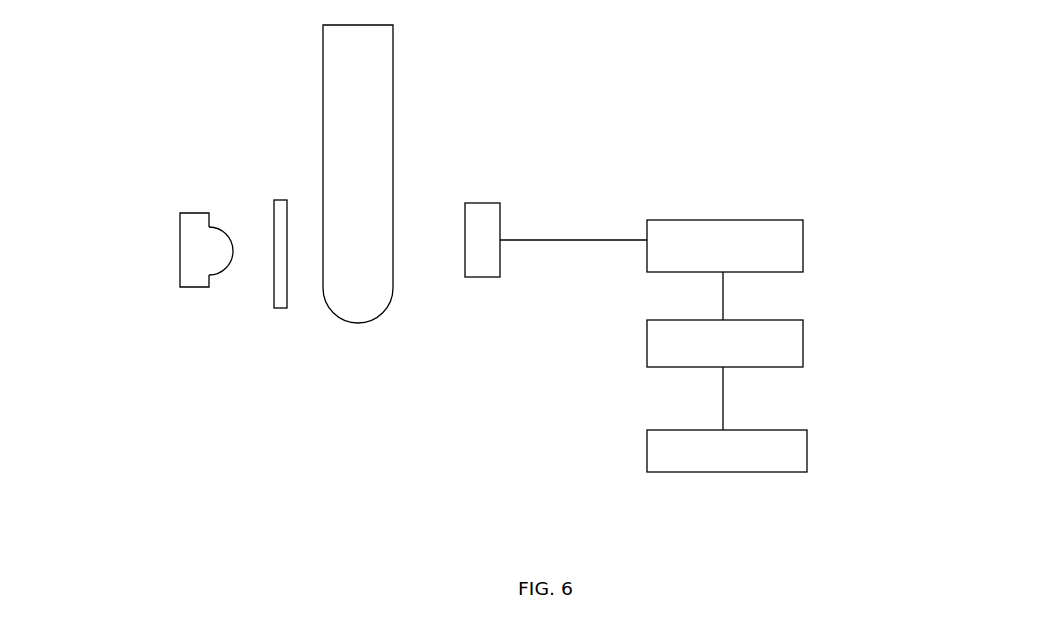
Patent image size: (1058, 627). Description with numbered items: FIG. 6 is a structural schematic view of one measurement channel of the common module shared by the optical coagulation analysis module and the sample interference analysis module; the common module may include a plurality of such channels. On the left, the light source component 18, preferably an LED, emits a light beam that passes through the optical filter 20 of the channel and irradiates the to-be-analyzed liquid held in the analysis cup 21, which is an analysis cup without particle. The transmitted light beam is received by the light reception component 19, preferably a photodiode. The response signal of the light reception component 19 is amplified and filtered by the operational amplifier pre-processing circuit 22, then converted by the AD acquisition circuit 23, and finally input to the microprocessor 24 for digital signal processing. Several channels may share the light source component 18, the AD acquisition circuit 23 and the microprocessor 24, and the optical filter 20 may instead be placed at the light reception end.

The light source component 18 is at (177, 247).
The light reception component 19 is at (503, 213).
The optical filter 20 is at (273, 296).
The analysis cup 21 is at (393, 290).
The operational amplifier pre-processing circuit 22 is at (806, 240).
The AD acquisition circuit 23 is at (806, 341).
The microprocessor 24 is at (808, 448).